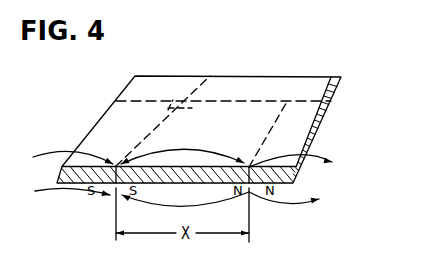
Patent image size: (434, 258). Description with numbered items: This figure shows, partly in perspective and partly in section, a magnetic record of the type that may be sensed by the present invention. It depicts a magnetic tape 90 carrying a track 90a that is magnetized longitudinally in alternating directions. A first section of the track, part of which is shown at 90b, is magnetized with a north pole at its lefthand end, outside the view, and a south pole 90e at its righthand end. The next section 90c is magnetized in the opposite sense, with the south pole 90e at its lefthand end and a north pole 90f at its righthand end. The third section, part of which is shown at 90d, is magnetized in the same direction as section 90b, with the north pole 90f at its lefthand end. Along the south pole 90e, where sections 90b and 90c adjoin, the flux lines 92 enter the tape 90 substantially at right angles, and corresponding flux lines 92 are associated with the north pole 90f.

The magnetic tape 90 is at (202, 115).
The track 90a is at (245, 113).
The first section of the track 90b is at (145, 138).
The next section of the track 90c is at (266, 139).
The third section of track 90d is at (267, 139).
The south pole 90e is at (210, 76).
The north pole 90f is at (283, 115).
The flux lines 92 is at (67, 192).